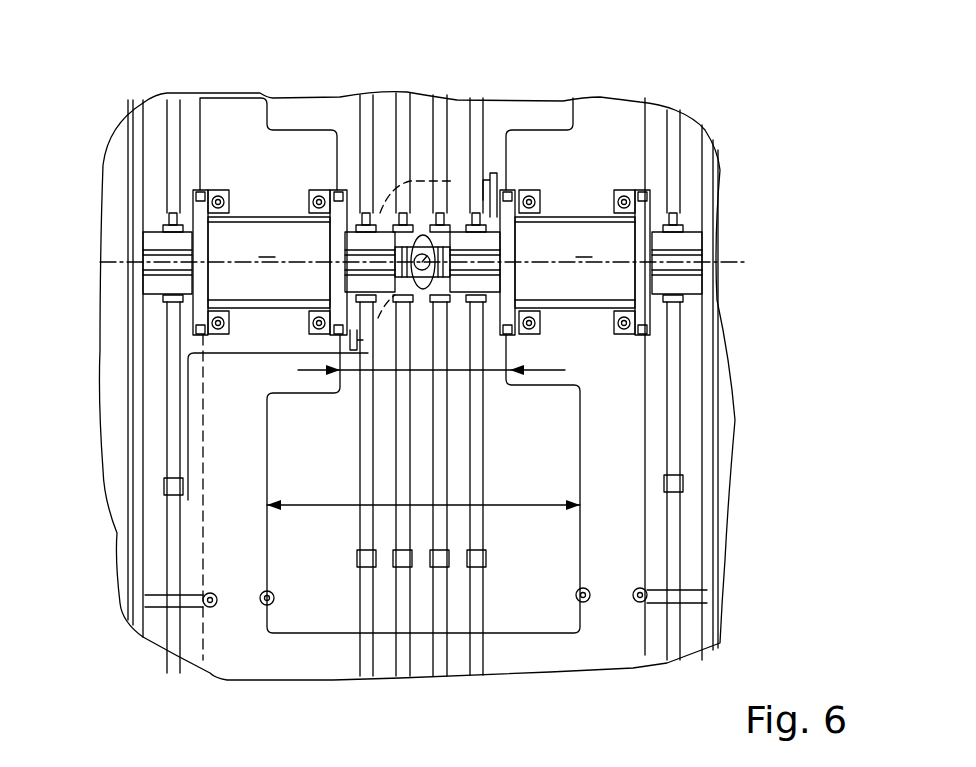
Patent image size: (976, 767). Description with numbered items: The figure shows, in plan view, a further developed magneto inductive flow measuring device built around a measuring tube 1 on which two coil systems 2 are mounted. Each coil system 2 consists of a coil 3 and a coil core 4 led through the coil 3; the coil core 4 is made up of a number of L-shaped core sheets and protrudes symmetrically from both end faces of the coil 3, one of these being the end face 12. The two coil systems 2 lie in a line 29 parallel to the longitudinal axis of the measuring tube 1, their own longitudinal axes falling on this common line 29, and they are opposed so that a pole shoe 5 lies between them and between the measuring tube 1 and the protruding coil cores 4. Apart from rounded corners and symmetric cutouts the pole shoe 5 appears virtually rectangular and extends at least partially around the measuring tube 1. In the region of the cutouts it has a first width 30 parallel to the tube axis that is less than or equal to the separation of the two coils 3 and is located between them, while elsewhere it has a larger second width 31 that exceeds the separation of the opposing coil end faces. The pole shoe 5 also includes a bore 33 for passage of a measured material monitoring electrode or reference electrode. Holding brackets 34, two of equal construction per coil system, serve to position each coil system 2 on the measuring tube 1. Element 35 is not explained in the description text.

The measuring tube 1 is at (627, 653).
The coil system 2 is at (247, 188).
The coil 3 is at (421, 262).
The coil core 4 is at (150, 283).
The pole shoe 5 is at (543, 112).
The end face of the coil 12 is at (132, 241).
The line parallel to the longitudinal axis of the measuring tube 29 is at (740, 262).
The first width 30 is at (548, 367).
The second width 31 is at (337, 503).
The bore 33 is at (405, 232).
The holding bracket 34 is at (313, 195).
The clamp 35 is at (676, 407).